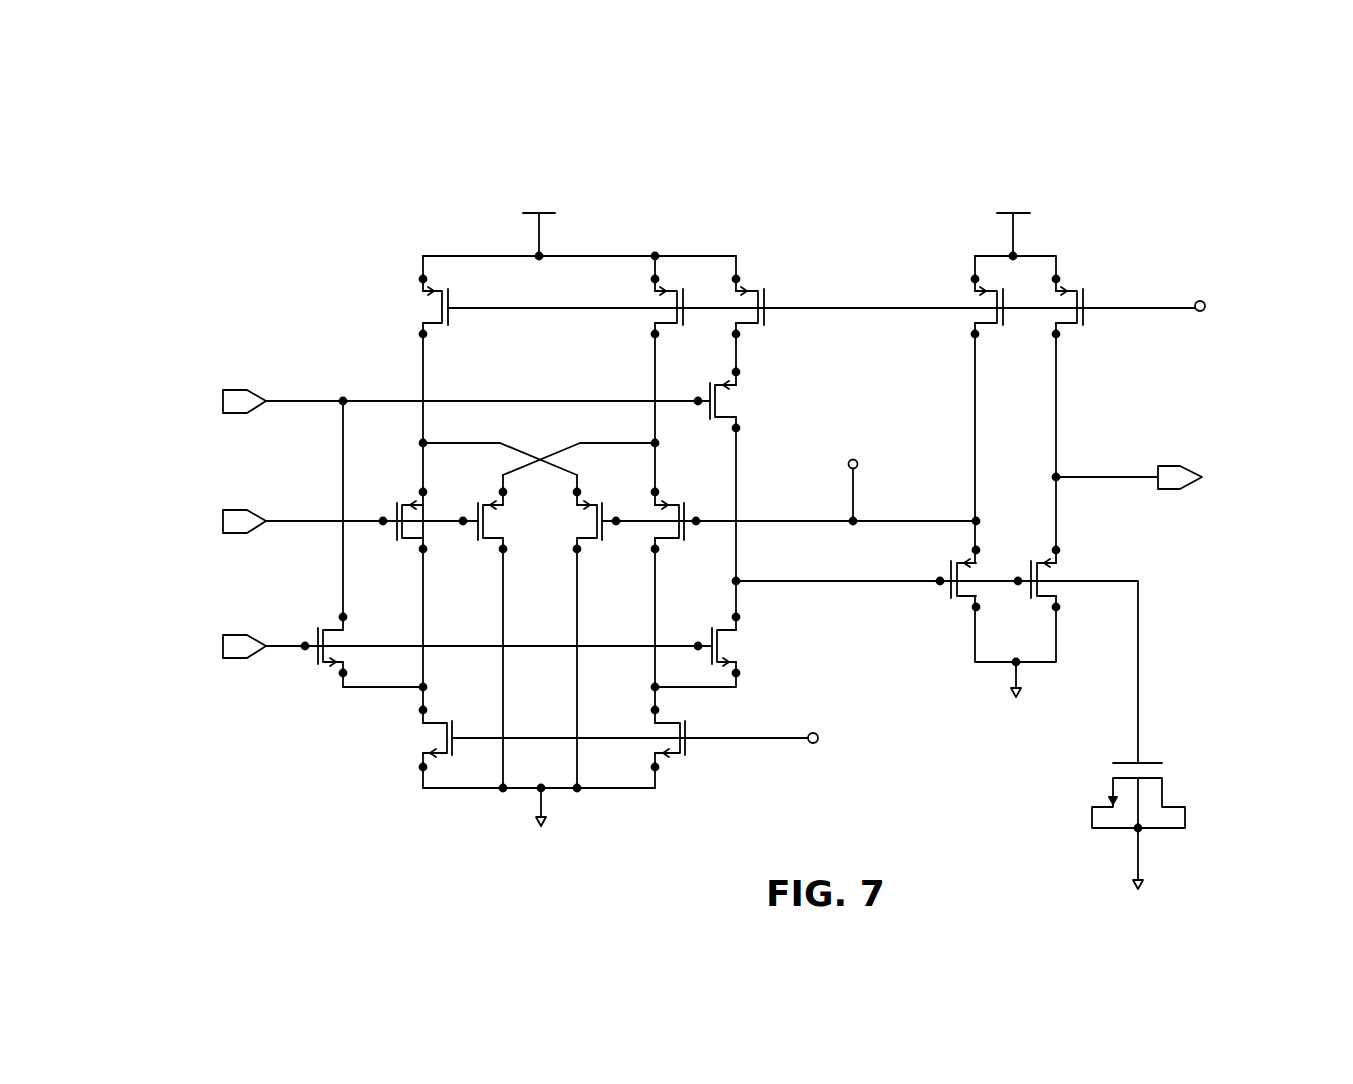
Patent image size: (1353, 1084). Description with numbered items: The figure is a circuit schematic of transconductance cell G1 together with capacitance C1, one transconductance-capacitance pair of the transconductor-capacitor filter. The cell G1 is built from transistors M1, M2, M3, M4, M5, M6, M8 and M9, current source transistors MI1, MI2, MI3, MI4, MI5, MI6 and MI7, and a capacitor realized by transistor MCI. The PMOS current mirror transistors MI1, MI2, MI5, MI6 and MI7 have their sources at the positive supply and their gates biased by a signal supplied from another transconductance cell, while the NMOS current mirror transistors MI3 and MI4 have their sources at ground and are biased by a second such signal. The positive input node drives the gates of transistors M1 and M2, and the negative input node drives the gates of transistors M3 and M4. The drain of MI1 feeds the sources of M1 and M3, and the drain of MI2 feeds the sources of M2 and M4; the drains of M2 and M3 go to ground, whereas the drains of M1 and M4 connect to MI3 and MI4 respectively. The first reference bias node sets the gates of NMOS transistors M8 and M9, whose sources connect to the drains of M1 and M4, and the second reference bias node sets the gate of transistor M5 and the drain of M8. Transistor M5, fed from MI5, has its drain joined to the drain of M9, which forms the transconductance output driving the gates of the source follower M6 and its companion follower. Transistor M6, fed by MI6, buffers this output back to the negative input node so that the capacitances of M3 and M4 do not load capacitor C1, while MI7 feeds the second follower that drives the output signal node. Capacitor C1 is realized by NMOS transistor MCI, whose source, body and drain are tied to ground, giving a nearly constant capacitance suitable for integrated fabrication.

The transconductance cell G1 is at (343, 199).
The capacitance C1 is at (1188, 758).
The transistor MC1 MCI is at (1112, 836).
The transistor M1 is at (404, 516).
The transistor M2 is at (505, 521).
The transistor M3 is at (575, 521).
The transistor M4 is at (678, 517).
The transistor M5 is at (740, 400).
The transistor M6 is at (992, 574).
The transistor M8 is at (349, 645).
The transistor M9 is at (742, 645).
The current mirror transistor MI1 is at (414, 307).
The current mirror transistor MI2 is at (645, 307).
The current mirror transistor MI3 is at (416, 739).
The current mirror transistor MI4 is at (648, 738).
The current mirror transistor MI5 is at (769, 307).
The current mirror transistor MI6 is at (965, 307).
The current mirror transistor MI7 is at (1081, 301).